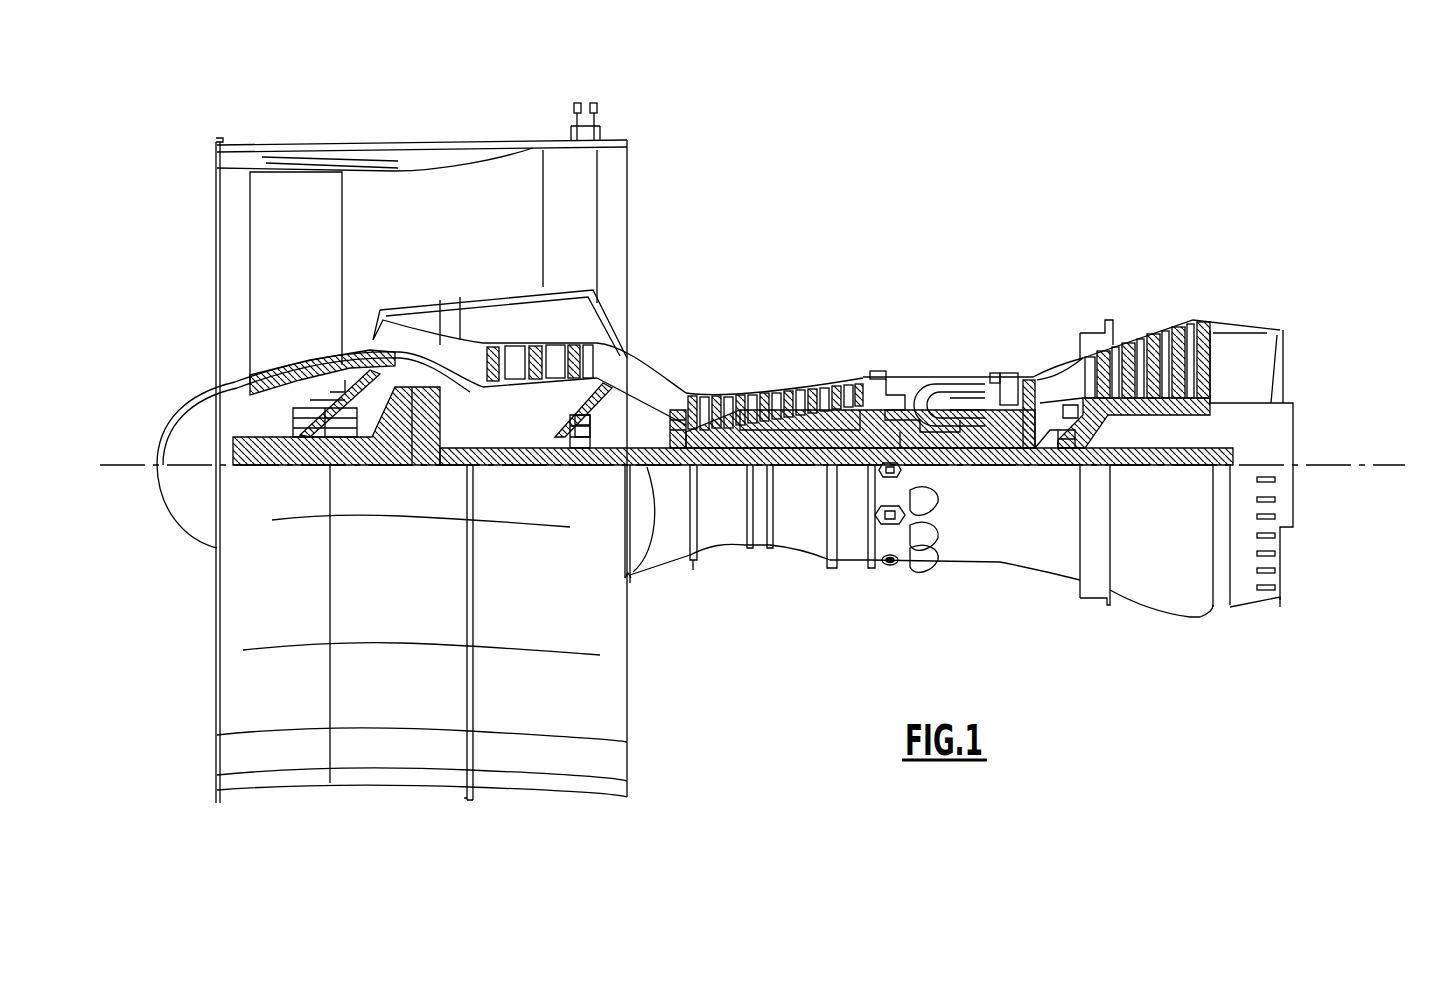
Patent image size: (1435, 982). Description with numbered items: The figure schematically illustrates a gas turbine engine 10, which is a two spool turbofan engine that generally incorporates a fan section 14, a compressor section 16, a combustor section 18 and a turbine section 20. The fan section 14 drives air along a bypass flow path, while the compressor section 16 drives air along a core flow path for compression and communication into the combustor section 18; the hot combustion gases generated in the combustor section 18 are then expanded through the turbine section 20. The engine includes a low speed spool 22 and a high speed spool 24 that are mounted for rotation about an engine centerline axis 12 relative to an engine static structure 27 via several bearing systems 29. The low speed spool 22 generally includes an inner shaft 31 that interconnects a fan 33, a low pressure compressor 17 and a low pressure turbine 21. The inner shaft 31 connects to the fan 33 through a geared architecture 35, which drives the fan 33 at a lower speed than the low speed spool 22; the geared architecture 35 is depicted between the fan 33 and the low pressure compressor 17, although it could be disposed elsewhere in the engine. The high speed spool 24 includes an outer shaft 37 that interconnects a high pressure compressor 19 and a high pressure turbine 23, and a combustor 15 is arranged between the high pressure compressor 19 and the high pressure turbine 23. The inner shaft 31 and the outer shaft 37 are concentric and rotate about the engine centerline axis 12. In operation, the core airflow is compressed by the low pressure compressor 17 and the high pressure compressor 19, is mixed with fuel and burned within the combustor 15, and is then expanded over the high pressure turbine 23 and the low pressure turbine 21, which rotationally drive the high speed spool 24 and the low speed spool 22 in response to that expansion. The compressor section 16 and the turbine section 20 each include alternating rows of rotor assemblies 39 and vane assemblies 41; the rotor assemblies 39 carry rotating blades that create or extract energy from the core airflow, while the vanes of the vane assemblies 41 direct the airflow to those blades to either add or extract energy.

The gas turbine engine 10 is at (955, 193).
The engine centerline axis 12 is at (1387, 465).
The fan section 14 is at (343, 137).
The combustor 15 is at (938, 400).
The compressor section 16 is at (682, 362).
The low pressure compressor 17 is at (600, 292).
The combustor section 18 is at (934, 348).
The high pressure compressor 19 is at (777, 437).
The turbine section 20 is at (1102, 307).
The low pressure turbine 21 is at (1158, 330).
The low speed spool 22 is at (801, 472).
The high pressure turbine 23 is at (1008, 374).
The high speed spool 24 is at (847, 427).
The engine static structure 27 is at (850, 565).
The bearing systems 29 is at (577, 450).
The inner shaft 31 is at (647, 470).
The fan 33 is at (307, 291).
The geared architecture 35 is at (430, 443).
The outer shaft 37 is at (932, 440).
The rotor assemblies 39 is at (462, 352).
The vane assemblies 41 is at (520, 335).